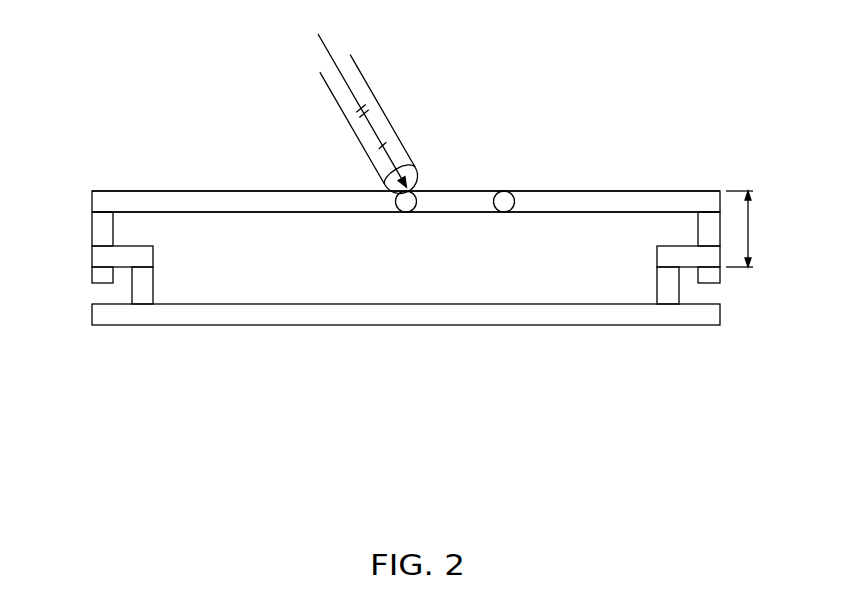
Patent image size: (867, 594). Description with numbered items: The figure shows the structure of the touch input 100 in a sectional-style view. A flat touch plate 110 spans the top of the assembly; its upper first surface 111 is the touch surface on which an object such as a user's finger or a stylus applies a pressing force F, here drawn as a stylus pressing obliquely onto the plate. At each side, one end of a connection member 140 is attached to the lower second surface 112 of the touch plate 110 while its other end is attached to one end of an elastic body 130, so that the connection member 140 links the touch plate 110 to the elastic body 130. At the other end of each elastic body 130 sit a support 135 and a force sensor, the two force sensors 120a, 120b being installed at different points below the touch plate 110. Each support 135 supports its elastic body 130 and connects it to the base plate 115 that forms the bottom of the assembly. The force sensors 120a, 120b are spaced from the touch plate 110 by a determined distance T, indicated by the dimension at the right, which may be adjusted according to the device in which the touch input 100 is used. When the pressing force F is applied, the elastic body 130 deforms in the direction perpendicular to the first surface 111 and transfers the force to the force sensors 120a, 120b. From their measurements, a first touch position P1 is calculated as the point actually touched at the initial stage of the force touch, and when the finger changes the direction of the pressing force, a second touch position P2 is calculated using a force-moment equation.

The touch input 100 is at (182, 71).
The touch plate 110 is at (580, 200).
The first surface 111 is at (641, 191).
The second surface 112 is at (561, 213).
The base plate 115 is at (564, 326).
The force sensor 120a is at (93, 276).
The force sensor 120b is at (721, 277).
The elastic body 130 is at (153, 257).
The support 135 is at (153, 285).
The connection member 140 is at (97, 231).
The first touch position P1 is at (406, 216).
The second touch position P2 is at (505, 216).
The distance T is at (746, 229).
The pressing force F is at (363, 106).